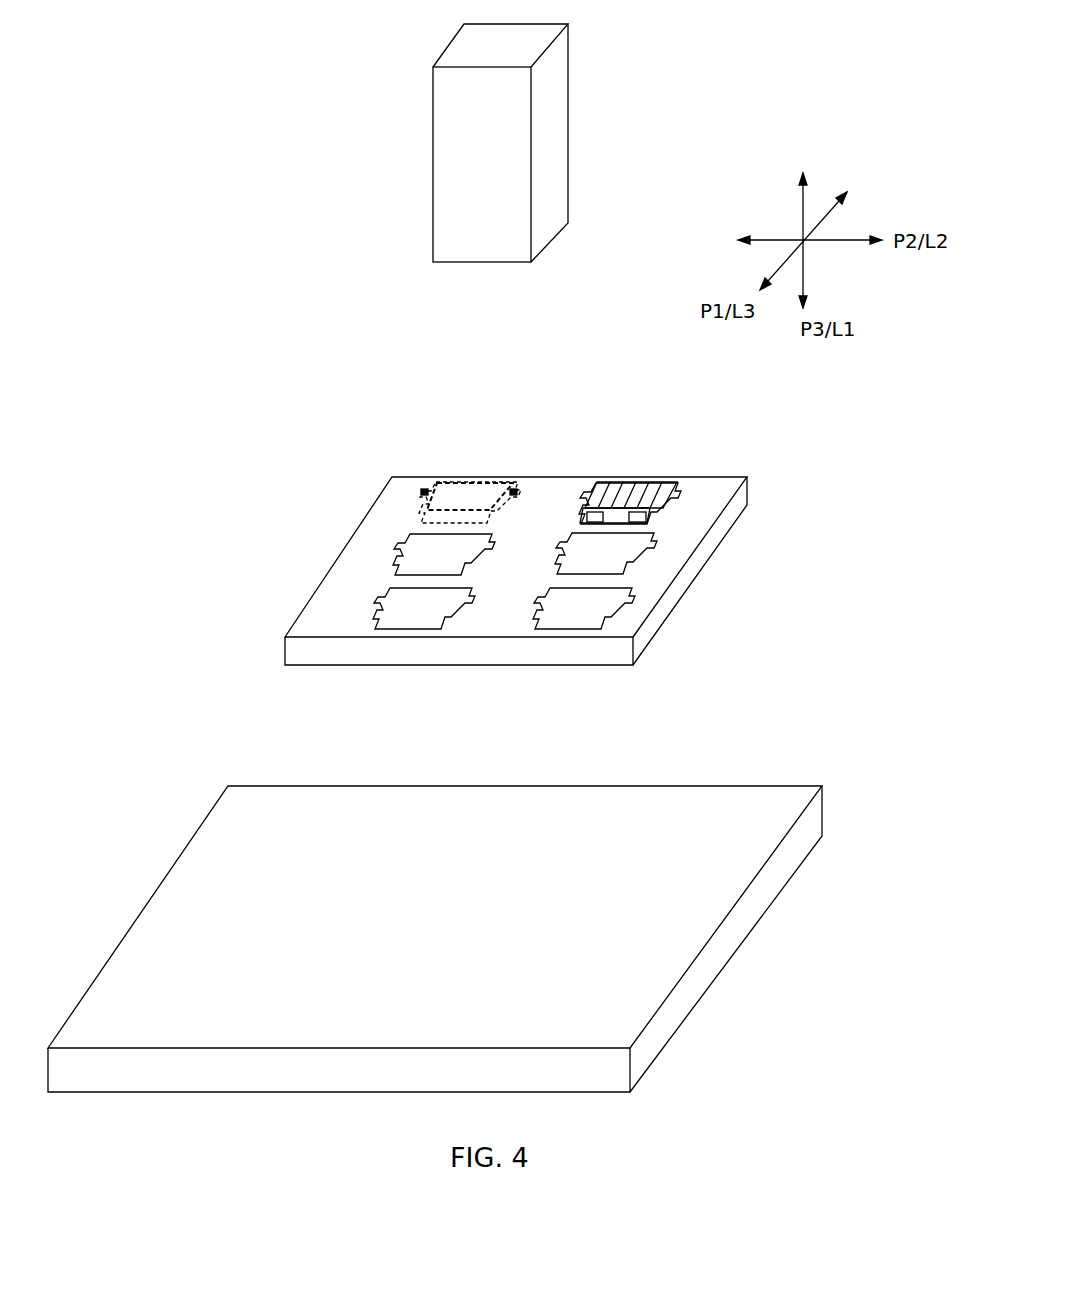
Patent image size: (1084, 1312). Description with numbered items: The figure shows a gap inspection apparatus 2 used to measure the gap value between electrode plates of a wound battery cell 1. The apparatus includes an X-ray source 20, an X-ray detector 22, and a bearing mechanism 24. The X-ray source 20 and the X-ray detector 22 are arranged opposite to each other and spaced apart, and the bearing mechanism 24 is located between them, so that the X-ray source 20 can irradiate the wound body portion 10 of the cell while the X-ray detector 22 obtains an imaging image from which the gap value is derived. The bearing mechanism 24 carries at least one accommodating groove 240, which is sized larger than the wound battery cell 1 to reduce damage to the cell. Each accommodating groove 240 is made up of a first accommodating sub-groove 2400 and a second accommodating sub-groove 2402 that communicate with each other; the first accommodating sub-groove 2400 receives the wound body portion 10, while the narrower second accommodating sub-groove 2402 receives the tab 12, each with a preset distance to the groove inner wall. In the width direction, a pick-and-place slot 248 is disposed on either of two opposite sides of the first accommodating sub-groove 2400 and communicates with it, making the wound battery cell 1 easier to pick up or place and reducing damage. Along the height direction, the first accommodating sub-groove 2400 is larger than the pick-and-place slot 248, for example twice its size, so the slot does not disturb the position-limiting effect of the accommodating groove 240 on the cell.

The gap inspection apparatus 2 is at (319, 77).
The X-ray source 20 is at (545, 163).
The X-ray detector 22 is at (700, 906).
The bearing mechanism 24 is at (665, 540).
The accommodating groove 240 is at (433, 469).
The first accommodating sub-groove 2400 is at (455, 481).
The second accommodating sub-groove 2402 is at (420, 518).
The pick-and-place slot 248 is at (432, 491).
The wound battery cell 1 is at (660, 470).
The wound body portion 10 is at (615, 492).
The tab 12 is at (637, 517).